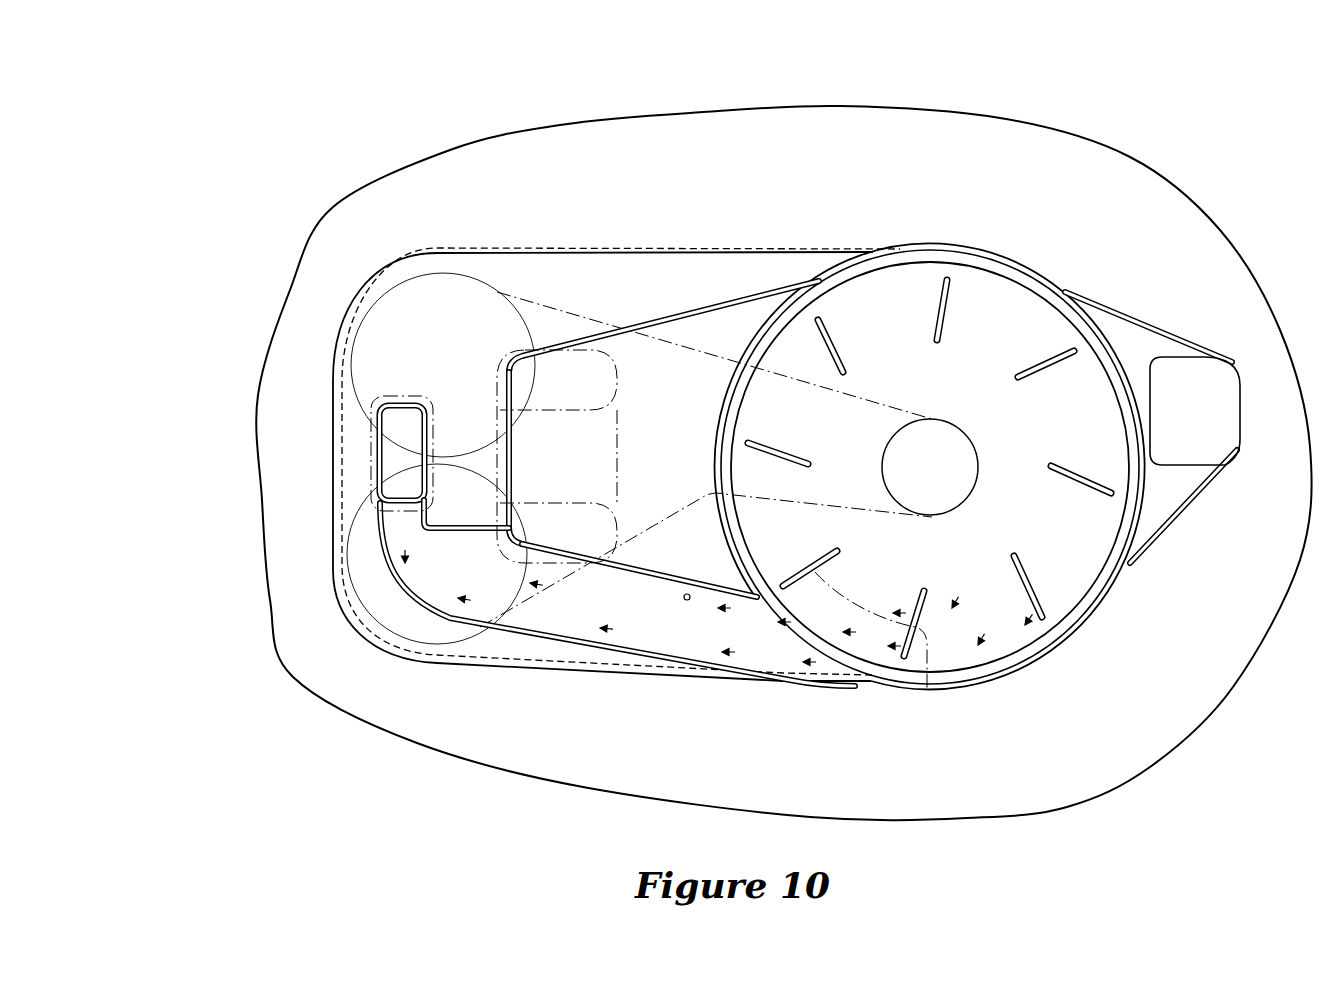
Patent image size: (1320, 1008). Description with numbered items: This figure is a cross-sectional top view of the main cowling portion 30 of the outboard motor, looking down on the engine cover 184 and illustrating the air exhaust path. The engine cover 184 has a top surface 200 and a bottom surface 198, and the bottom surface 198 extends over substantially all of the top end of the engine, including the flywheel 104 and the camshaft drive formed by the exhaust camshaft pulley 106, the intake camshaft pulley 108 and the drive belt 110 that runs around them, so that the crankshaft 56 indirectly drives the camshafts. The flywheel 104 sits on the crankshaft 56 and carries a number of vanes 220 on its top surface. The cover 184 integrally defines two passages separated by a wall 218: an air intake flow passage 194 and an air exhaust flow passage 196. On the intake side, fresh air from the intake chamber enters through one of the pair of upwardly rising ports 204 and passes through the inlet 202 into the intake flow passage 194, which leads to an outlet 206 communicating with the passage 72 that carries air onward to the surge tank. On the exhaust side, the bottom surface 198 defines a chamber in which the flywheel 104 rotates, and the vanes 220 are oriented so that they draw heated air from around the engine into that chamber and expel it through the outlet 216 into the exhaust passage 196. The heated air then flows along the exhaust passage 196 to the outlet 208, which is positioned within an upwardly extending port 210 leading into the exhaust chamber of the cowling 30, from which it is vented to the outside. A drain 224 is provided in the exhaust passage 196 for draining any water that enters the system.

The main cowling portion 30 is at (650, 112).
The top surface 200 is at (526, 270).
The drive belt 110 is at (590, 310).
The air intake flow passage 194 is at (700, 367).
The bottom surface 198 is at (770, 282).
The engine cover 184 is at (852, 240).
The vanes 220 is at (957, 293).
The flywheel 104 is at (1028, 302).
The outlet 206 is at (1143, 340).
The upwardly extending port 210 is at (400, 395).
The intake camshaft pulley 108 is at (337, 408).
The crankshaft 56 is at (881, 442).
The inlet 202 is at (620, 456).
The upwardly rising ports 204 is at (560, 412).
The exhaust camshaft pulley 106 is at (357, 520).
The outlet 208 is at (400, 487).
The drain 224 is at (687, 594).
The passage 72 is at (1190, 447).
The air exhaust flow passage 196 is at (557, 613).
The wall 218 is at (658, 657).
The outlet 216 is at (813, 630).